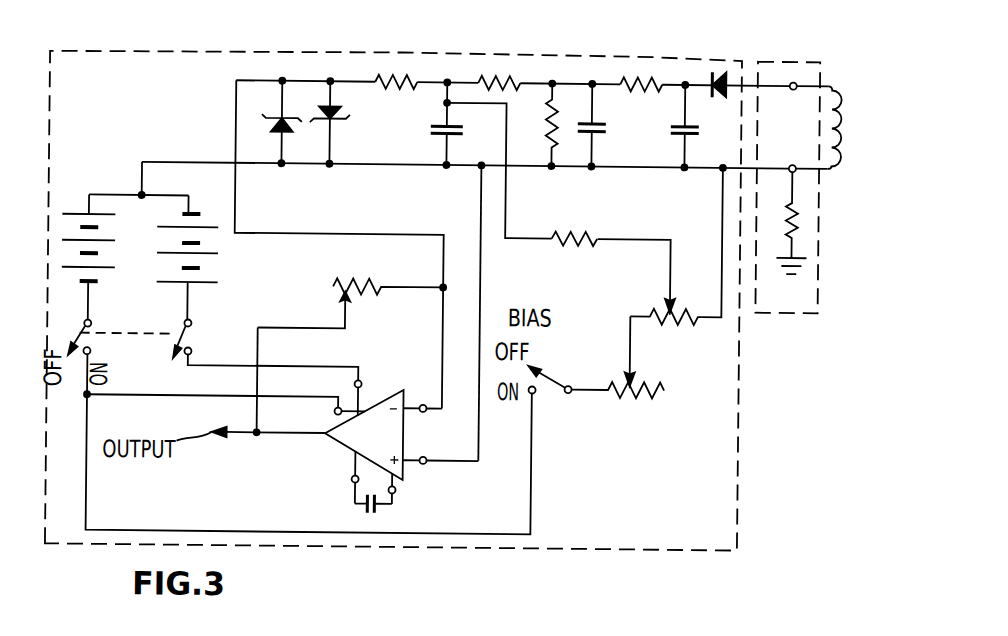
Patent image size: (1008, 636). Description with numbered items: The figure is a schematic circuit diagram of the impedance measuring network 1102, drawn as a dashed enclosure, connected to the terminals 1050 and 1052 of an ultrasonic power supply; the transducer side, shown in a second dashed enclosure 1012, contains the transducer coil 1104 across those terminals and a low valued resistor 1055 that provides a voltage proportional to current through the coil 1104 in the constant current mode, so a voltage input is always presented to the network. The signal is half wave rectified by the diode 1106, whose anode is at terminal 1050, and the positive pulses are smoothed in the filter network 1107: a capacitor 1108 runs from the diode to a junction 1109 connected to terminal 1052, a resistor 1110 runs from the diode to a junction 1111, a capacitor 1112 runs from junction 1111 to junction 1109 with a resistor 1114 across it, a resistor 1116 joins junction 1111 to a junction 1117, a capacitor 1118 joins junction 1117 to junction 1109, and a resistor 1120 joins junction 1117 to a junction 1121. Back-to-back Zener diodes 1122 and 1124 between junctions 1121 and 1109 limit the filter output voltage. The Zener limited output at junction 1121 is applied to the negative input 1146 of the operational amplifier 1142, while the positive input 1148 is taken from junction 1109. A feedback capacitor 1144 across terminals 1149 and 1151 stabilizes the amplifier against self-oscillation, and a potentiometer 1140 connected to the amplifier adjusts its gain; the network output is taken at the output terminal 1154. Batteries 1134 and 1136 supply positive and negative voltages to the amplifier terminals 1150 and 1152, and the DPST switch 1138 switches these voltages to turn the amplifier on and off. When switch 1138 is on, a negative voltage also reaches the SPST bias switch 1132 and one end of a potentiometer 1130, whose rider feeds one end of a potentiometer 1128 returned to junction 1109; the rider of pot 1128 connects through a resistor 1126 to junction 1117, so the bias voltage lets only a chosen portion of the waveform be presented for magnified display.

The impedance measuring network 1102 is at (298, 549).
The probe assembly 1012 is at (772, 311).
The terminal 1050 is at (791, 77).
The terminal 1052 is at (791, 160).
The transducer coil 1104 is at (836, 166).
The low valued resistor 1055 is at (797, 230).
The diode 1106 is at (722, 72).
The capacitor 1108 is at (700, 127).
The resistor 1110 is at (642, 76).
The junction 1111 is at (591, 78).
The capacitor 1112 is at (604, 131).
The resistor 1114 is at (560, 98).
The resistor 1116 is at (510, 78).
The junction 1117 is at (446, 78).
The capacitor 1118 is at (430, 133).
The resistor 1120 is at (400, 78).
The junction 1121 is at (326, 104).
The Zener diode 1122 is at (349, 119).
The Zener diode 1124 is at (278, 114).
The filter network 1107 is at (545, 202).
The junction 1109 is at (720, 168).
The resistor 1126 is at (559, 236).
The potentiometer 1128 is at (688, 320).
The potentiometer 1130 is at (636, 397).
The bias switch 1132 is at (546, 396).
The battery 1134 is at (213, 283).
The battery 1136 is at (115, 271).
The DPST switch 1138 is at (133, 337).
The potentiometer 1140 is at (362, 279).
The operational amplifier 1142 is at (404, 389).
The capacitor 1144 is at (382, 514).
The negative input 1146 is at (425, 412).
The positive input 1148 is at (424, 464).
The terminal 1149 is at (396, 492).
The terminal 1150 is at (356, 384).
The terminal 1151 is at (354, 480).
The terminal 1152 is at (336, 412).
The output terminal 1154 is at (256, 437).